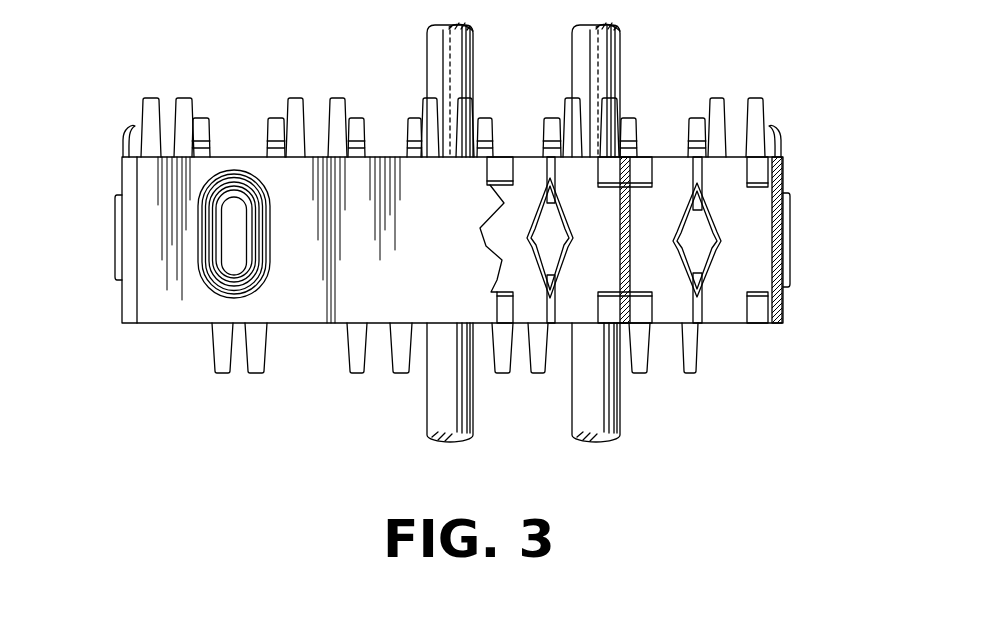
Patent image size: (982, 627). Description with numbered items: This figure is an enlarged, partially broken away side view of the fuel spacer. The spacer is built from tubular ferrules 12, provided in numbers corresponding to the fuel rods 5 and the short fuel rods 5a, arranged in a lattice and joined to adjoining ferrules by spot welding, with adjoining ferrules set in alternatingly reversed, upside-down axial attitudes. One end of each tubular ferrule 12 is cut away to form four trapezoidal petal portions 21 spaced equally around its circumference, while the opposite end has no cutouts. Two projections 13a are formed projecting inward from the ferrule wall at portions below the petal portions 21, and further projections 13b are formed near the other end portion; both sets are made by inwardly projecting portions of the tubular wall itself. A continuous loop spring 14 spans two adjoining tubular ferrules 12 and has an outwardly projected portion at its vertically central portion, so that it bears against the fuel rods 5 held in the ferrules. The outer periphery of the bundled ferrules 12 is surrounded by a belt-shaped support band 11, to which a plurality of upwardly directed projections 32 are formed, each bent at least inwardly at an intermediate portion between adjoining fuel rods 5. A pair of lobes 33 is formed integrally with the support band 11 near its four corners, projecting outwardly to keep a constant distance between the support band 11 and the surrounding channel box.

The fuel rods 5 is at (468, 63).
The short fuel rods 5a is at (468, 63).
The support band 11 is at (122, 300).
The tubular ferrule 12 is at (657, 192).
The projections 13a is at (647, 307).
The projections 13b is at (647, 162).
The continuous loop spring 14 is at (565, 267).
The trapezoidal petal portions 21 is at (150, 98).
The projections 32 is at (125, 140).
The lobes 33 is at (222, 294).